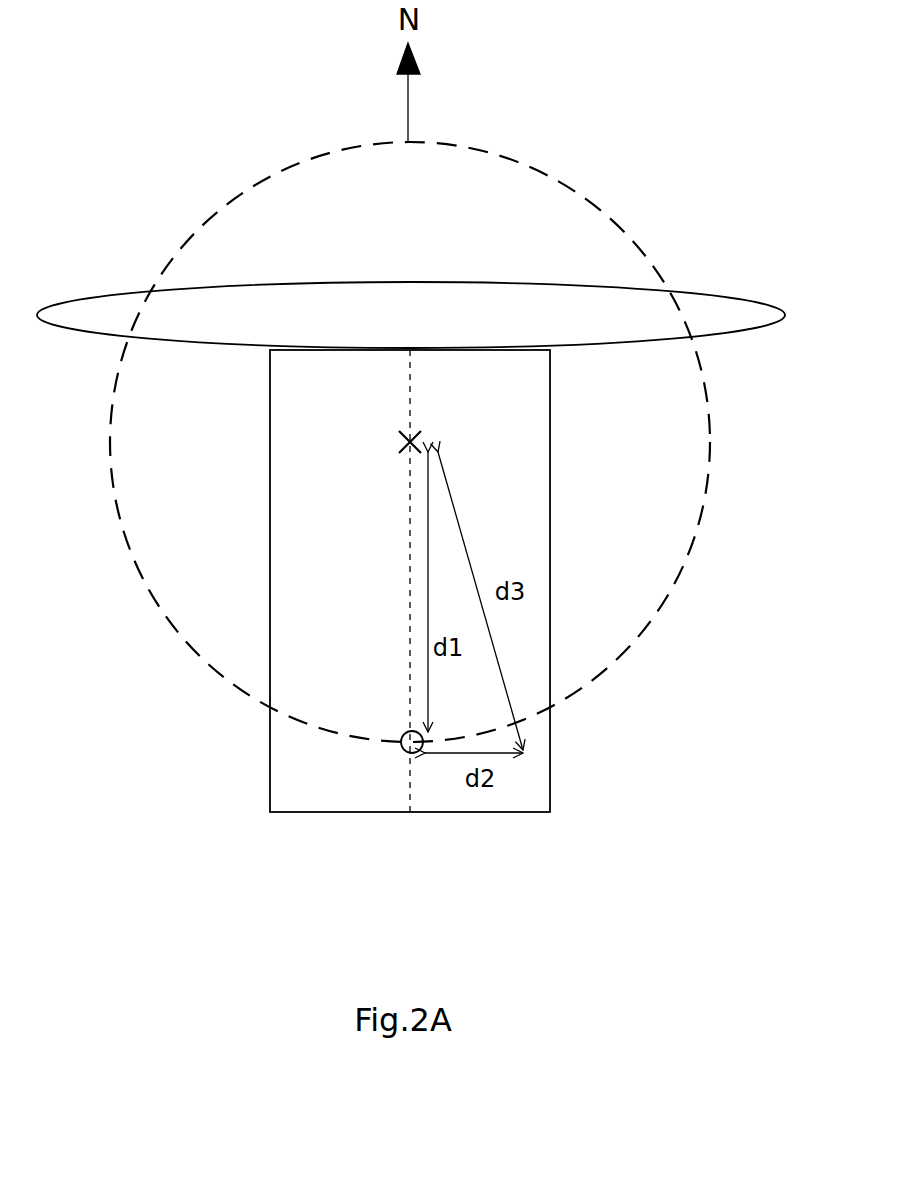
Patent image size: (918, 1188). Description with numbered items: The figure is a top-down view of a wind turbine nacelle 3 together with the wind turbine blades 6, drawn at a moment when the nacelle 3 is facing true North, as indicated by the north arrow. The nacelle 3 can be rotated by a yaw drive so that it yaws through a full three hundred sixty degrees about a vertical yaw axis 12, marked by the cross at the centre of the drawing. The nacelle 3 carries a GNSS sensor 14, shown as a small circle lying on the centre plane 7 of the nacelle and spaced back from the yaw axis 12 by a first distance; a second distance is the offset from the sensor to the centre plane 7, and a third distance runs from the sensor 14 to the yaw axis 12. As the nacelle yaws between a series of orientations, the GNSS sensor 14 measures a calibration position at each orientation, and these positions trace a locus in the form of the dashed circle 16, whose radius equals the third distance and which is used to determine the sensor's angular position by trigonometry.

The circle 16 is at (255, 185).
The wind turbine blades 6 is at (523, 285).
The nacelle 3 is at (297, 775).
The centre plane 7 is at (407, 597).
The yaw axis 12 is at (400, 445).
The GNSS sensor 14 is at (418, 752).